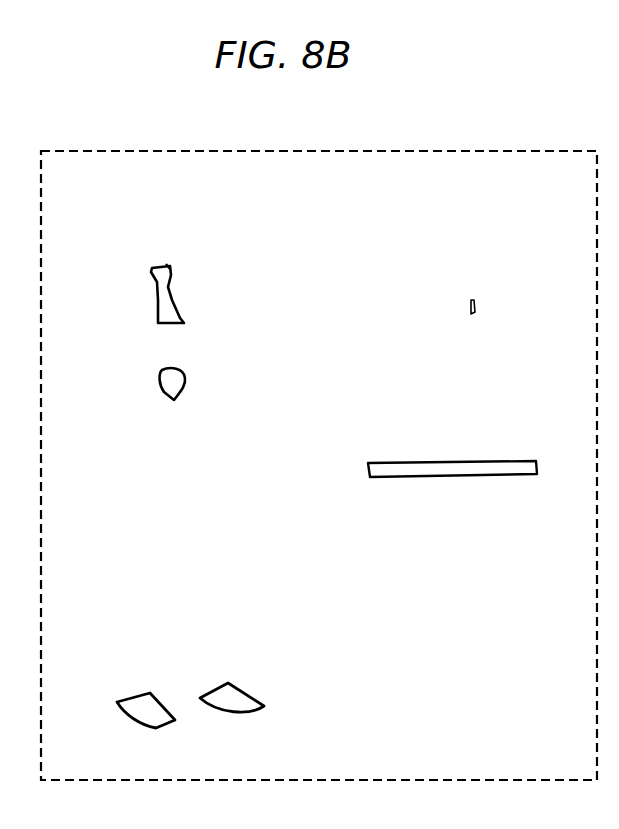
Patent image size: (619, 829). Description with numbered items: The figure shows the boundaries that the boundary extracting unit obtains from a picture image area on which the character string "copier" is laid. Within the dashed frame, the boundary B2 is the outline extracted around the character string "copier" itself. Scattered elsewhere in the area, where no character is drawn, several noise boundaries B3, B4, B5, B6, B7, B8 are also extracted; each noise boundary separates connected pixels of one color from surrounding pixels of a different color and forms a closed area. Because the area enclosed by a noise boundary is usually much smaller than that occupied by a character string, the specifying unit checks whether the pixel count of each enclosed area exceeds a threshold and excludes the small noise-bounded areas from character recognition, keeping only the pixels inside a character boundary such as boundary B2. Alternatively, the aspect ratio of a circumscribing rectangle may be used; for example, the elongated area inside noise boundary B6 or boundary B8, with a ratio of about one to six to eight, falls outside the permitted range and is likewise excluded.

The boundary B2 is at (393, 379).
The noise boundary B3 is at (174, 402).
The noise boundary B4 is at (168, 268).
The noise boundary B5 is at (474, 298).
The noise boundary B6 is at (400, 479).
The noise boundary B7 is at (150, 691).
The noise boundary B8 is at (230, 682).